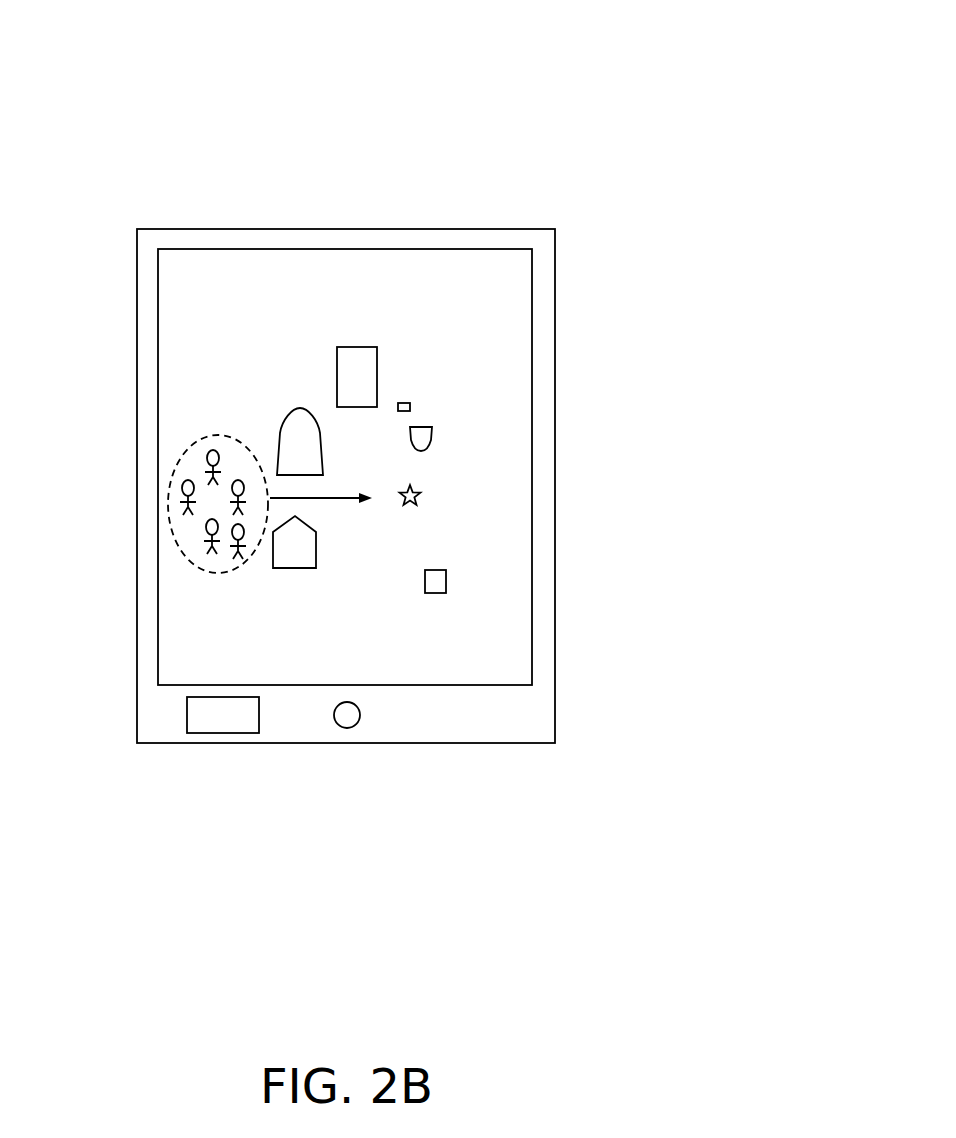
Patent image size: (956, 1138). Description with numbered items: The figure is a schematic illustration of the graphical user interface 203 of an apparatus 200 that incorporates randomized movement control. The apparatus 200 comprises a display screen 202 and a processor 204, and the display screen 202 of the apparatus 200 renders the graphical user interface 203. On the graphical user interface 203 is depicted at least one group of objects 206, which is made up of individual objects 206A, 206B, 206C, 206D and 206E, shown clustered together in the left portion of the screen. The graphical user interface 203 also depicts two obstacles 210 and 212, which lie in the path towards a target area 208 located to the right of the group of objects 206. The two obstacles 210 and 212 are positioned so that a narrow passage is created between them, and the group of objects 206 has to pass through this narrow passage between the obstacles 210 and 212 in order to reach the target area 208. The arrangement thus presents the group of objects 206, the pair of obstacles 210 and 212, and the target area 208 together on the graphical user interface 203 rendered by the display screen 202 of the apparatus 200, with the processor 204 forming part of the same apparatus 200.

The apparatus 200 is at (612, 55).
The display screen 202 is at (148, 317).
The graphical user interface 203 is at (203, 292).
The processor 204 is at (245, 727).
The group of objects 206 is at (170, 478).
The object 206A is at (205, 453).
The object 206B is at (198, 497).
The object 206C is at (210, 533).
The object 206D is at (234, 547).
The object 206E is at (239, 478).
The target area 208 is at (420, 490).
The obstacle 210 is at (299, 432).
The obstacle 212 is at (289, 553).